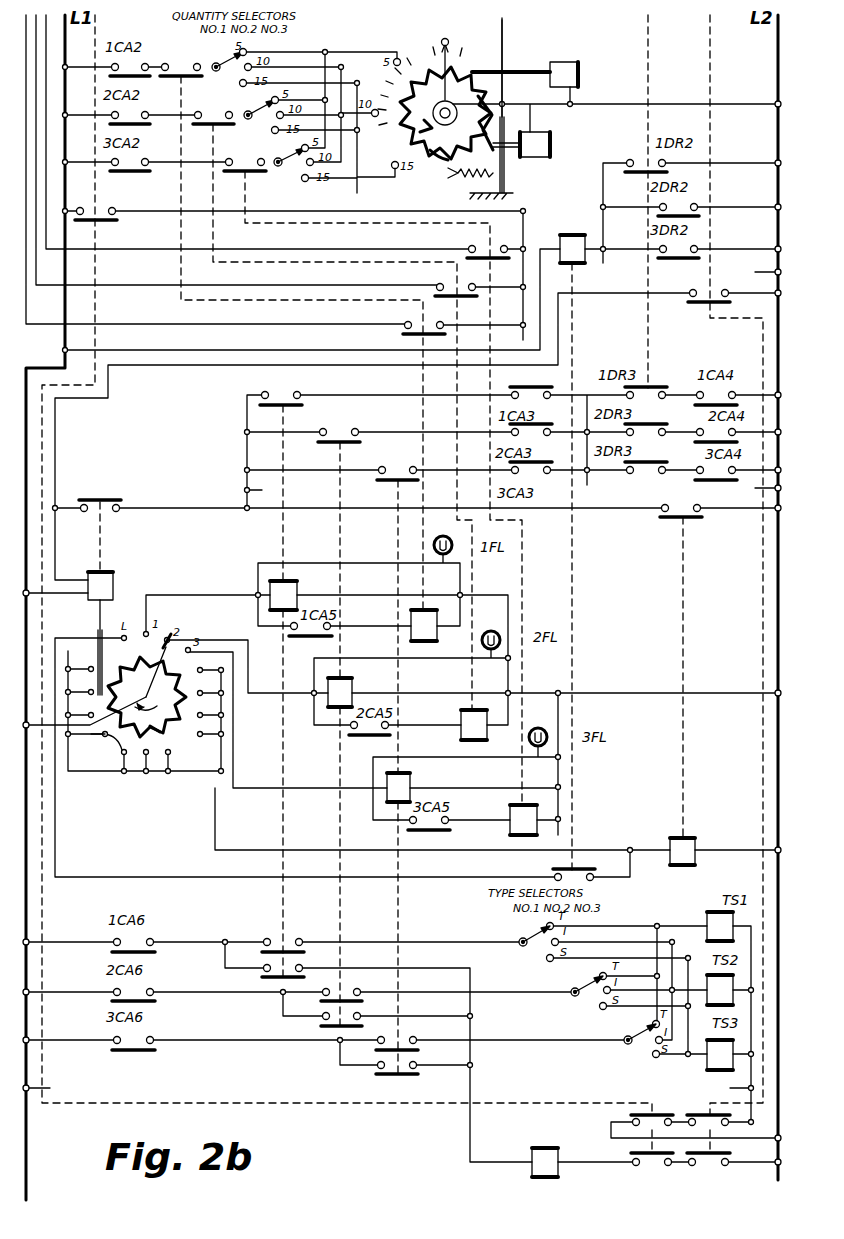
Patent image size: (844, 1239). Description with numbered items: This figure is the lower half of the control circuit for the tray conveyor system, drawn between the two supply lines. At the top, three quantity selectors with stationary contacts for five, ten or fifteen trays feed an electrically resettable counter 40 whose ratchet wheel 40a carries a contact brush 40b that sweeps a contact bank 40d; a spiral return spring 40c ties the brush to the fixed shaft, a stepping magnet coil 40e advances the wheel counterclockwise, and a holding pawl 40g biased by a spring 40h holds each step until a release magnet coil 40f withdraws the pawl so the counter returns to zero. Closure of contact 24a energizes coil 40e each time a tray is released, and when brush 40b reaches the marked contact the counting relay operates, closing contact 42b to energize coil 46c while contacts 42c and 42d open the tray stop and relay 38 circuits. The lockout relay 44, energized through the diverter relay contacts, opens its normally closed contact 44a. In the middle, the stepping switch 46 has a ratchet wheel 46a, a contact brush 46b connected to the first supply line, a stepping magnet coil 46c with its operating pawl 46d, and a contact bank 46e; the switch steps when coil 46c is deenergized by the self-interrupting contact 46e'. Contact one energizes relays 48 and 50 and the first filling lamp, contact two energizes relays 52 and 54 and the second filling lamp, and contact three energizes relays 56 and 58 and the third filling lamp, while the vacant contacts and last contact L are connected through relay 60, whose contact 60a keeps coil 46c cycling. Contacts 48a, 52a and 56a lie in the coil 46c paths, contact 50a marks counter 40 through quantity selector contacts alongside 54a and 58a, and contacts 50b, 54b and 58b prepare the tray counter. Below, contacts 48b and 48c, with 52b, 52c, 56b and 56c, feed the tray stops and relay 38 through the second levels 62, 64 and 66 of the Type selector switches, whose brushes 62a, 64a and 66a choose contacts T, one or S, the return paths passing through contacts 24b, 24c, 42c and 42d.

The normally open contact of relay 24 24a is at (96, 211).
The normally closed contact of relay 24 24b is at (632, 1115).
The normally closed contact of relay 24 24c is at (655, 1162).
The relay 38 is at (530, 1152).
The electrically resettable counter 40 is at (456, 72).
The ratchet wheel 40a is at (435, 158).
The contact brush 40b is at (466, 36).
The spiral return spring 40c is at (456, 115).
The contact bank 40d is at (424, 52).
The stepping magnet coil 40e is at (568, 62).
The release magnet coil 40f is at (550, 146).
The holding pawl 40g is at (505, 160).
The spring 40h is at (470, 180).
The normally open contact of relay 42 42b is at (712, 290).
The contact of relay 42 42c is at (700, 1112).
The contact of relay 42 42d is at (717, 1160).
The lockout relay 44 is at (570, 236).
The normally closed contact of relay 44 44a is at (560, 870).
The stepping switch 46 is at (185, 616).
The ratchet wheel 46a is at (164, 730).
The contact brush 46b is at (170, 645).
The stepping magnet coil 46c is at (114, 588).
The operating pawl 46d is at (97, 622).
The contact bank 46e is at (92, 752).
The normally closed self-interrupting contact 46e' is at (113, 492).
The relay 48 is at (297, 590).
The contact of relay 48 48a is at (283, 395).
The contact of relay 48 48b is at (275, 940).
The contact of relay 48 48c is at (262, 972).
The relay 50 is at (432, 630).
The contact of relay 50 50a is at (185, 56).
The contact of relay 50 50b is at (420, 325).
The relay 52 is at (352, 690).
The contact of relay 52 52a is at (340, 432).
The contact of relay 52 52b is at (345, 995).
The contact of relay 52 52c is at (318, 1020).
The relay 54 is at (462, 718).
The quantity selector contact 54a is at (211, 114).
The contact of relay 54 54b is at (445, 286).
The relay 56 is at (410, 785).
The contact of relay 56 56a is at (397, 470).
The contact of relay 56 56b is at (410, 1043).
The contact of relay 56 56c is at (380, 1070).
The relay 58 is at (510, 815).
The quantity selector contact 58a is at (243, 160).
The contact of relay 58 58b is at (485, 248).
The relay 60 is at (697, 845).
The contact of relay 60 60a is at (702, 518).
The second level of Type selector switch 62 is at (520, 930).
The contact brush 62a is at (530, 946).
The second level of Type selector switch 64 is at (580, 978).
The contact brush 64a is at (580, 997).
The second level of Type selector switch 66 is at (628, 1026).
The contact brush 66a is at (640, 1042).